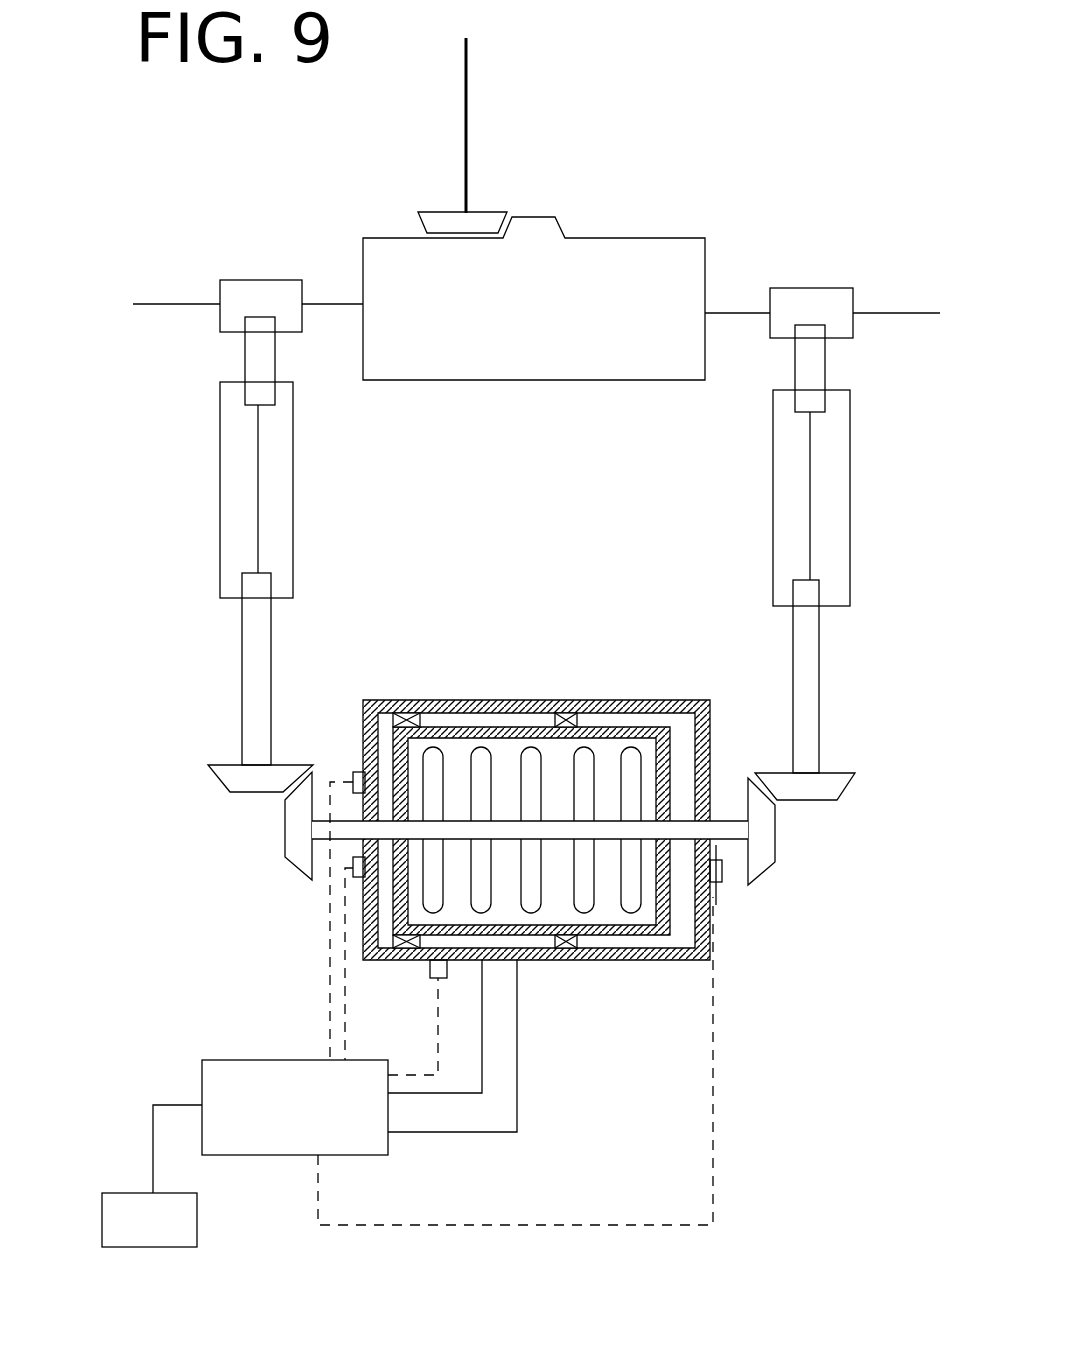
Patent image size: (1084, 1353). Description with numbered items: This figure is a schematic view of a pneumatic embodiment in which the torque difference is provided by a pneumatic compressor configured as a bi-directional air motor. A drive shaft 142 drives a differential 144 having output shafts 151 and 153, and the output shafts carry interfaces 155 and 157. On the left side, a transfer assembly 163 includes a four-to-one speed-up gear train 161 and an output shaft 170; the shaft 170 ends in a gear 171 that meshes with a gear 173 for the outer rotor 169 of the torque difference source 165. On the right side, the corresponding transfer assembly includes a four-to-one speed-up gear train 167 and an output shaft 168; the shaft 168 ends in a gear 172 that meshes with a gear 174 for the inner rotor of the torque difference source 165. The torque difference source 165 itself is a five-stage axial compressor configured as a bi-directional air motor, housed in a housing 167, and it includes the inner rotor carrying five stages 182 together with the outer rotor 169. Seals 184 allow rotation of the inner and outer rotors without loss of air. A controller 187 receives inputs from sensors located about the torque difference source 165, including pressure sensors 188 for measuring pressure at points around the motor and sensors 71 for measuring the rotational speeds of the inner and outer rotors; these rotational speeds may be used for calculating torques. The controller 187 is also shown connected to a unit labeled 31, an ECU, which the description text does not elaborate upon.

The drive shaft 142 is at (487, 135).
The differential 144 is at (635, 240).
The output shaft 151 is at (176, 259).
The output shaft 153 is at (896, 283).
The interface 155 is at (291, 267).
The interface 157 is at (779, 281).
The speed-up gear train 161 is at (200, 361).
The speed-up gear train 167 is at (694, 512).
The transfer assembly 163 is at (190, 490).
The torque difference source 165 is at (748, 543).
The output shaft 170 is at (199, 669).
The output shaft 168 is at (856, 676).
The gear 171 is at (454, 875).
The gear 172 is at (852, 807).
The gear 173 is at (257, 871).
The gear 174 is at (801, 867).
The outer rotor 169 is at (536, 866).
The stages 182 is at (553, 784).
The seals 184 is at (577, 837).
The pressure sensors 188 is at (370, 867).
The controller 187 is at (295, 1082).
The ECU 31 is at (155, 1200).
The sensors 71 is at (736, 933).